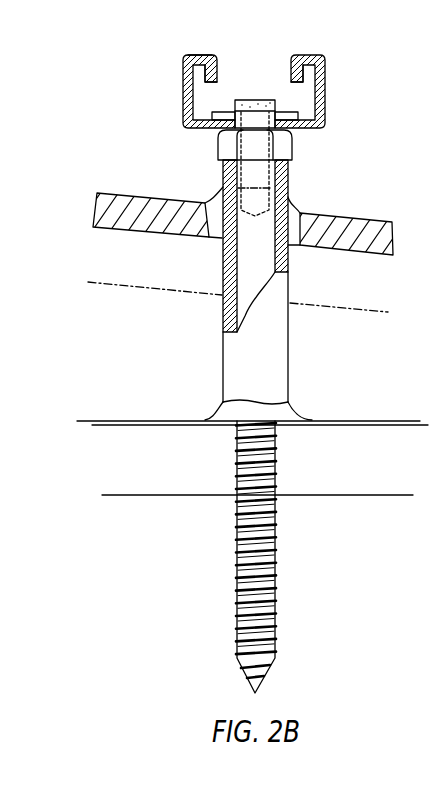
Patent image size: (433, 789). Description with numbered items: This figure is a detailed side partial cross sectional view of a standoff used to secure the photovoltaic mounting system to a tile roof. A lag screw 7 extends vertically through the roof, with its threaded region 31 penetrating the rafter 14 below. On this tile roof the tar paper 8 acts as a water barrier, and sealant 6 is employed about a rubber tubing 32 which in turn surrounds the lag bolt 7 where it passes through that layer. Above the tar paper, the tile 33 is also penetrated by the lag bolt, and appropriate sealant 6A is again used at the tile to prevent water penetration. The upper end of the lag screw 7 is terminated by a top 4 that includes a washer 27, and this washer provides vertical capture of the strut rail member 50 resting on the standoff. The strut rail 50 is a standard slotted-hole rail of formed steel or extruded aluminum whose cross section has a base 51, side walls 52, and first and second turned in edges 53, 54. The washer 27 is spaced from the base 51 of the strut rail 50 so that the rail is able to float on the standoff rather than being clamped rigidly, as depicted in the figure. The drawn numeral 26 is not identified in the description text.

The top 4 is at (218, 144).
The sealant 6 is at (292, 410).
The sealant 6A is at (300, 205).
The lag screw 7 is at (235, 426).
The tar paper 8 is at (133, 419).
The rafter 14 is at (171, 586).
The nut 26 is at (245, 100).
The washer 27 is at (222, 111).
The threaded region 31 is at (277, 472).
The rubber tubing 32 is at (275, 360).
The tile 33 is at (102, 213).
The strut rail 50 is at (185, 100).
The base 51 is at (203, 114).
The side walls 52 is at (185, 62).
The first turned in edge 53 is at (218, 72).
The second turned in edge 54 is at (290, 70).